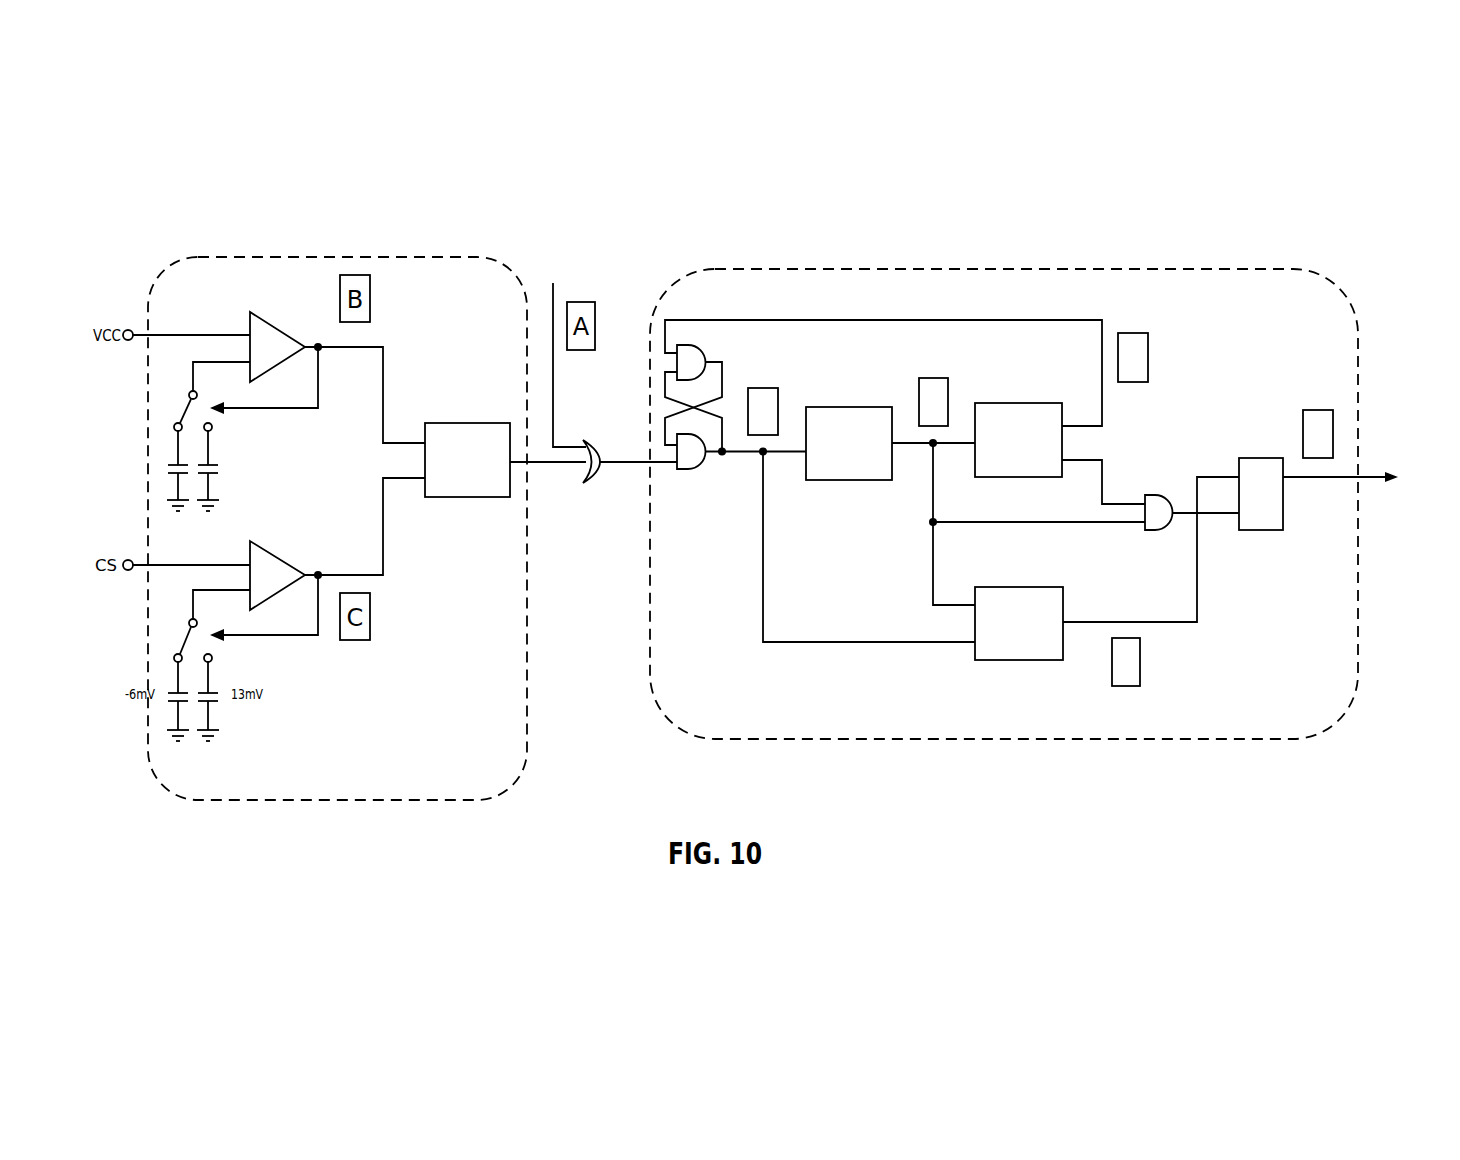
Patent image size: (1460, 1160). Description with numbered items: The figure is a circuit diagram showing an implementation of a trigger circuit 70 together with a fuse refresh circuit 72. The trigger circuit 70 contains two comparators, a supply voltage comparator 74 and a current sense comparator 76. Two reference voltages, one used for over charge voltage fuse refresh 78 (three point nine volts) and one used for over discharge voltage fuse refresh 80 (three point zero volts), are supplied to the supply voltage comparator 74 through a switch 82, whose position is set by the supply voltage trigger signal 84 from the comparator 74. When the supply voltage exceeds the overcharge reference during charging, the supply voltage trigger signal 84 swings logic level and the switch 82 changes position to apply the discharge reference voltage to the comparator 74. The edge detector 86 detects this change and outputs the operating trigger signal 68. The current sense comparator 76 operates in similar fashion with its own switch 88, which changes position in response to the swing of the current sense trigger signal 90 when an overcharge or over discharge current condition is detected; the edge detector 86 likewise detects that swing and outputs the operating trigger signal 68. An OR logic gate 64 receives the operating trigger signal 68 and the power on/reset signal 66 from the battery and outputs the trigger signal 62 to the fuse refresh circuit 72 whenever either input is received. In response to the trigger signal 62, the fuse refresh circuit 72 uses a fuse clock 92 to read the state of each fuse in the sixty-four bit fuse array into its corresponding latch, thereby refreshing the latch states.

The trigger signal 62 is at (630, 466).
The OR logic gate 64 is at (583, 440).
The power on/reset signal 66 is at (554, 380).
The operating trigger signal 68 is at (568, 466).
The trigger circuit 70 is at (428, 257).
The fuse refresh circuit 72 is at (1251, 270).
The supply voltage comparator 74 is at (276, 327).
The current sense comparator 76 is at (279, 559).
The over charge voltage fuse refresh reference voltage 78 is at (176, 490).
The over discharge voltage fuse refresh reference voltage 80 is at (211, 478).
The switch 82 is at (189, 394).
The supply voltage trigger signal 84 is at (355, 347).
The edge detector 86 is at (462, 497).
The switch 88 is at (189, 622).
The current sense trigger signal 90 is at (386, 574).
The fuse clock 92 is at (880, 406).